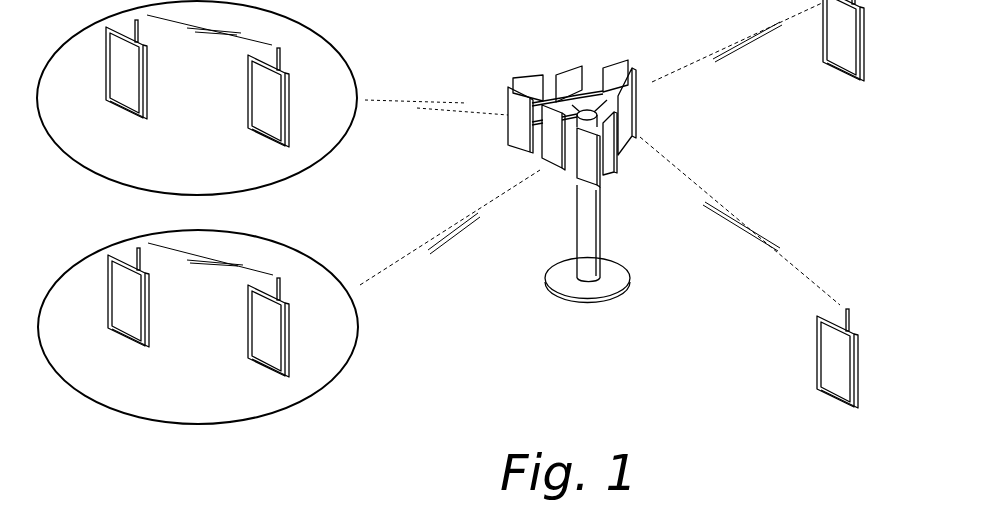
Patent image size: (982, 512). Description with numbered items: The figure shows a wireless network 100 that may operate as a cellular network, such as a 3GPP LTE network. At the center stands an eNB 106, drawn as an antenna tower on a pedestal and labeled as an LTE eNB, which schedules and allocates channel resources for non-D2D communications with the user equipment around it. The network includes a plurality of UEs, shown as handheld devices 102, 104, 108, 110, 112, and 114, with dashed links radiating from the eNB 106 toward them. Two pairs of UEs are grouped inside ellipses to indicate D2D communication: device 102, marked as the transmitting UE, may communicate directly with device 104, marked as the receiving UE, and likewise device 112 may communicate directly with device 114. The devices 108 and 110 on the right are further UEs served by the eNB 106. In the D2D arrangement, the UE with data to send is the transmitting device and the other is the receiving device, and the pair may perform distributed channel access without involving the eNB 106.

The wireless network 100 is at (600, 410).
The device 102 is at (147, 68).
The device 104 is at (254, 103).
The eNB 106 is at (578, 222).
The device 108 is at (836, 68).
The device 110 is at (830, 386).
The device 112 is at (118, 300).
The device 114 is at (258, 320).